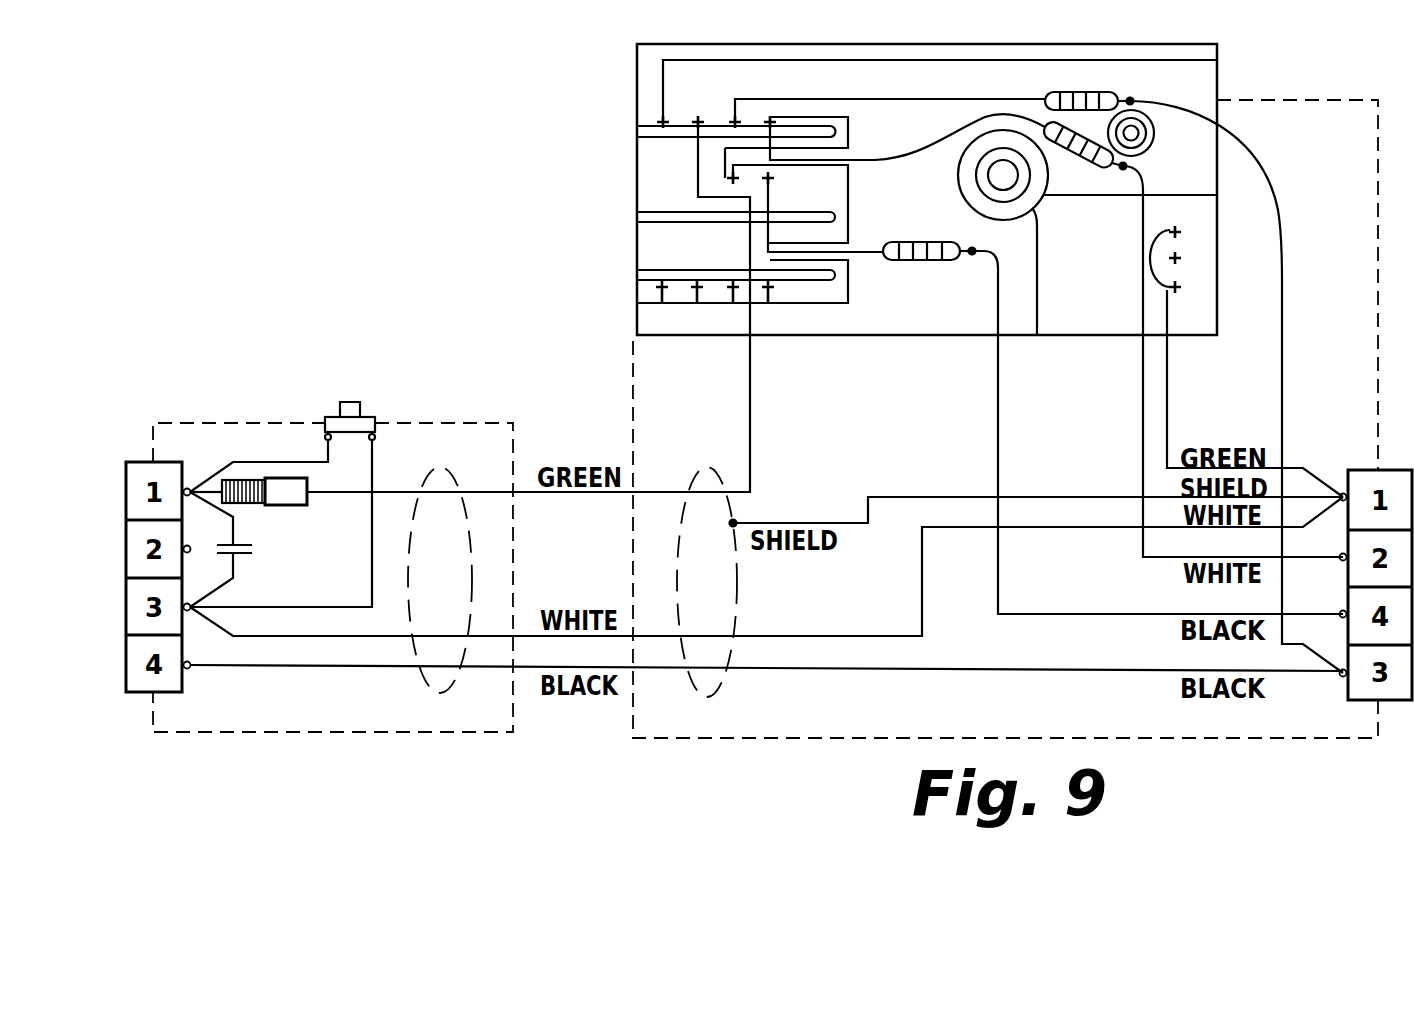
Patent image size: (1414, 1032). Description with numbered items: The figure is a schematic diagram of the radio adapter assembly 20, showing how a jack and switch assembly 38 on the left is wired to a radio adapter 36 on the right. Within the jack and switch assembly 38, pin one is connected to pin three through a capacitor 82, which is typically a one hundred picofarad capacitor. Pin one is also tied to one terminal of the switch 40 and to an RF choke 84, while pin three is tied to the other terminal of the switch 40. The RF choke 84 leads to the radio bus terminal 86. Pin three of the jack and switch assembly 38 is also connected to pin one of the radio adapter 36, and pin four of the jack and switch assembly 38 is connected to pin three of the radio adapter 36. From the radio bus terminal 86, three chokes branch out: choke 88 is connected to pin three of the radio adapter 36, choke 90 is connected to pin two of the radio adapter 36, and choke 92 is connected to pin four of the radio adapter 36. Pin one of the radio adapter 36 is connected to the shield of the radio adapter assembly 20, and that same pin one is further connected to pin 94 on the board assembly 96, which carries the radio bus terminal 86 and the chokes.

The radio adapter assembly 20 is at (512, 340).
The radio adapter 36 is at (805, 738).
The jack and switch assembly 38 is at (287, 733).
The switch 40 is at (350, 402).
The capacitor 82 is at (249, 554).
The RF choke 84 is at (291, 507).
The radio bus terminal 86 is at (693, 124).
The choke 88 is at (1047, 93).
The choke 90 is at (1083, 156).
The choke 92 is at (918, 242).
The pin 94 is at (1181, 230).
The board assembly 96 is at (1197, 338).